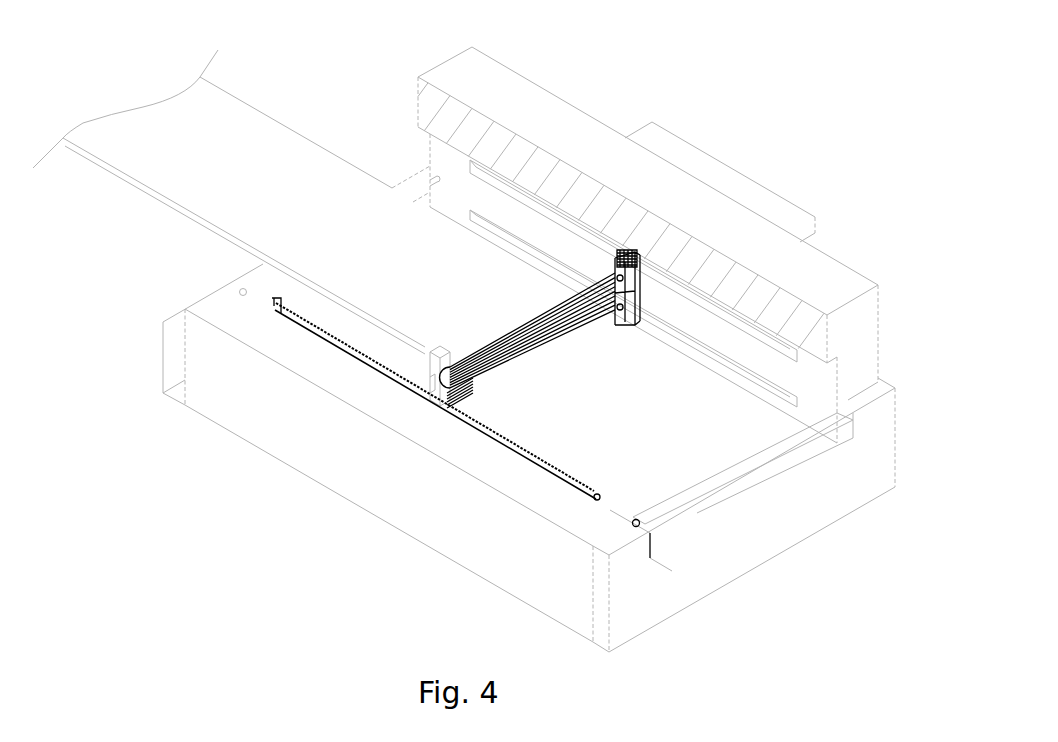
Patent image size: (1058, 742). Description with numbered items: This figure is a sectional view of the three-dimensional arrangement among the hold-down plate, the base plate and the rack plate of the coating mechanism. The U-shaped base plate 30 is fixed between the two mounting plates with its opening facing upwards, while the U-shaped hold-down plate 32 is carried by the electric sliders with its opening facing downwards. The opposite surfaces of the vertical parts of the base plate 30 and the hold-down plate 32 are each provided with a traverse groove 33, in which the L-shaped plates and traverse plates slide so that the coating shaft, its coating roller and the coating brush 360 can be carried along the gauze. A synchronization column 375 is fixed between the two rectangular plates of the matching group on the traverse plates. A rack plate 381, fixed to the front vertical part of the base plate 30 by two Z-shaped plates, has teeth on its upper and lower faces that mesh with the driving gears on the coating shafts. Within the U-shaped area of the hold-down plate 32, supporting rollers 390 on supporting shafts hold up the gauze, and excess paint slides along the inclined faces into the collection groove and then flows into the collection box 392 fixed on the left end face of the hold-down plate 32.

The base plate 30 is at (287, 428).
The hold-down plate 32 is at (820, 283).
The traverse groove 33 is at (732, 312).
The coating brush 360 is at (560, 315).
The synchronization column 375 is at (505, 322).
The rack plate 381 is at (497, 440).
The supporting roller 390 is at (648, 515).
The collection box 392 is at (173, 375).